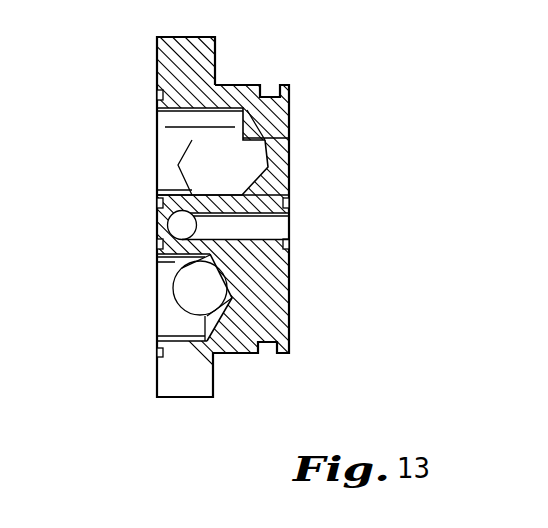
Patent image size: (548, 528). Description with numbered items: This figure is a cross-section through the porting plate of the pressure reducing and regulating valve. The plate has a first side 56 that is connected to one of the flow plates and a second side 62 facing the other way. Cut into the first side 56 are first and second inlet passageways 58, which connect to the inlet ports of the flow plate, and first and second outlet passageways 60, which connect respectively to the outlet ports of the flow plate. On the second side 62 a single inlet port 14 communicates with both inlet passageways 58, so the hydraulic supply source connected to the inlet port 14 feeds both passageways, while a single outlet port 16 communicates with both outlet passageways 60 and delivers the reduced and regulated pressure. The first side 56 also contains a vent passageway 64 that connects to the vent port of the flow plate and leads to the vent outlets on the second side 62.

The inlet port 14 is at (160, 143).
The outlet port 16 is at (160, 325).
The first side 56 is at (289, 120).
The inlet passageways 58 is at (289, 167).
The outlet passageways 60 is at (232, 301).
The second side 62 is at (155, 67).
The vent passageway 64 is at (240, 237).